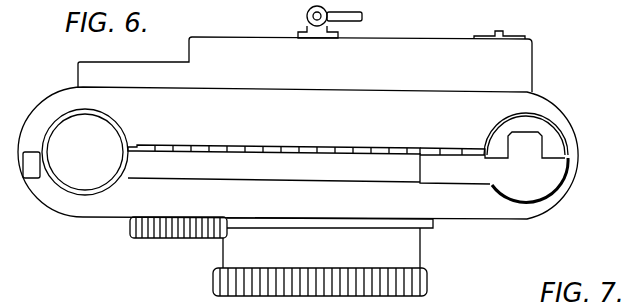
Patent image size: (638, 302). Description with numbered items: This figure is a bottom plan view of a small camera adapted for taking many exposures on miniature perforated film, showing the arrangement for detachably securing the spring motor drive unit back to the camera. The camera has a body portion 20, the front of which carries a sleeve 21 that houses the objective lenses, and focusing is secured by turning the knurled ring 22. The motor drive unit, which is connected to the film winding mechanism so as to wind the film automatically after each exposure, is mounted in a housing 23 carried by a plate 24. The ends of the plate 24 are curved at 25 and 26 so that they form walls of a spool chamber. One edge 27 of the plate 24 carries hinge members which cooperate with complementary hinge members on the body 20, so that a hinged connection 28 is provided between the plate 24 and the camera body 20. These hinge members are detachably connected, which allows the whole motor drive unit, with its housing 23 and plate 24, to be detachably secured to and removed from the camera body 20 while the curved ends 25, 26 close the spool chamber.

The body portion 20 is at (501, 213).
The sleeve 21 is at (412, 253).
The knurled ring 22 is at (133, 236).
The housing 23 is at (520, 60).
The plate 24 is at (552, 97).
The curved end 25 is at (44, 104).
The curved end 26 is at (586, 125).
The edge 27 is at (470, 150).
The hinged connection 28 is at (303, 146).